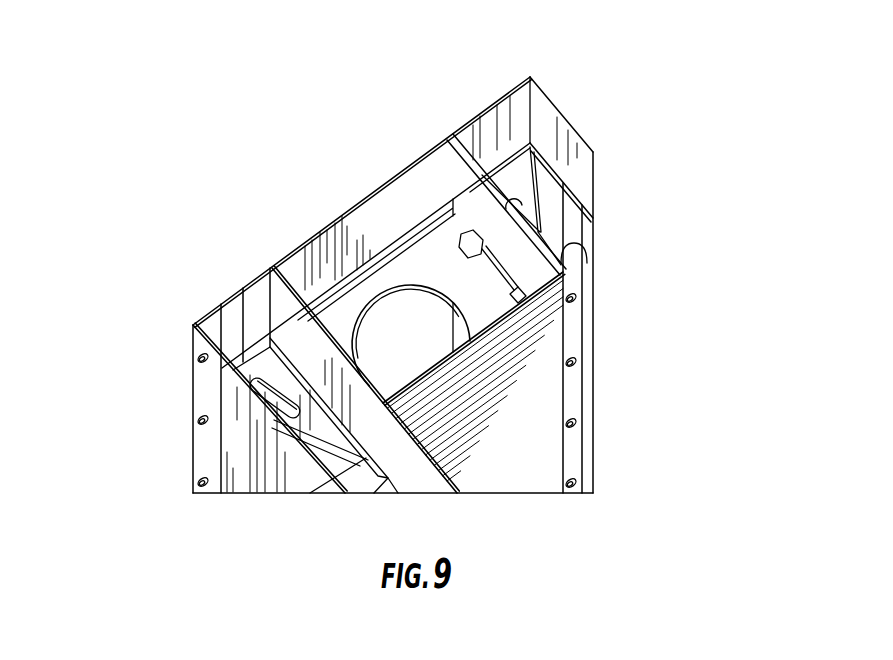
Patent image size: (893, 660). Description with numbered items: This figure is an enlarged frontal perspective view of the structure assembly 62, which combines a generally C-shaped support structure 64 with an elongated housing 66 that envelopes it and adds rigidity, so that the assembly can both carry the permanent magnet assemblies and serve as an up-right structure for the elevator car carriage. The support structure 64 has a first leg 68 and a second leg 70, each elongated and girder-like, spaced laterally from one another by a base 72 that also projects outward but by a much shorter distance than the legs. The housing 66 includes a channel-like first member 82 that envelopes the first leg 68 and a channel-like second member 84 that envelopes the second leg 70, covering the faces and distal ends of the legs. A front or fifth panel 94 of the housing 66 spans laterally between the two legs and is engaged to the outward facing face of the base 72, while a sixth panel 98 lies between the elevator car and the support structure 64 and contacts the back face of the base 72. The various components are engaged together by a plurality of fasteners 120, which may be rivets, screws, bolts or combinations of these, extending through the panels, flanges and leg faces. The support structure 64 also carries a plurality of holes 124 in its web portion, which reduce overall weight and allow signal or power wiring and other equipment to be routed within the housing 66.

The structure assembly 62 is at (583, 48).
The support structure 64 is at (426, 253).
The housing 66 is at (247, 270).
The first leg 68 is at (391, 480).
The second leg 70 is at (588, 247).
The base 72 is at (404, 270).
The first member 82 is at (228, 510).
The second member 84 is at (578, 125).
The fifth panel 94 is at (500, 452).
The sixth panel 98 is at (296, 264).
The fasteners 120 is at (441, 272).
The holes 124 is at (422, 346).